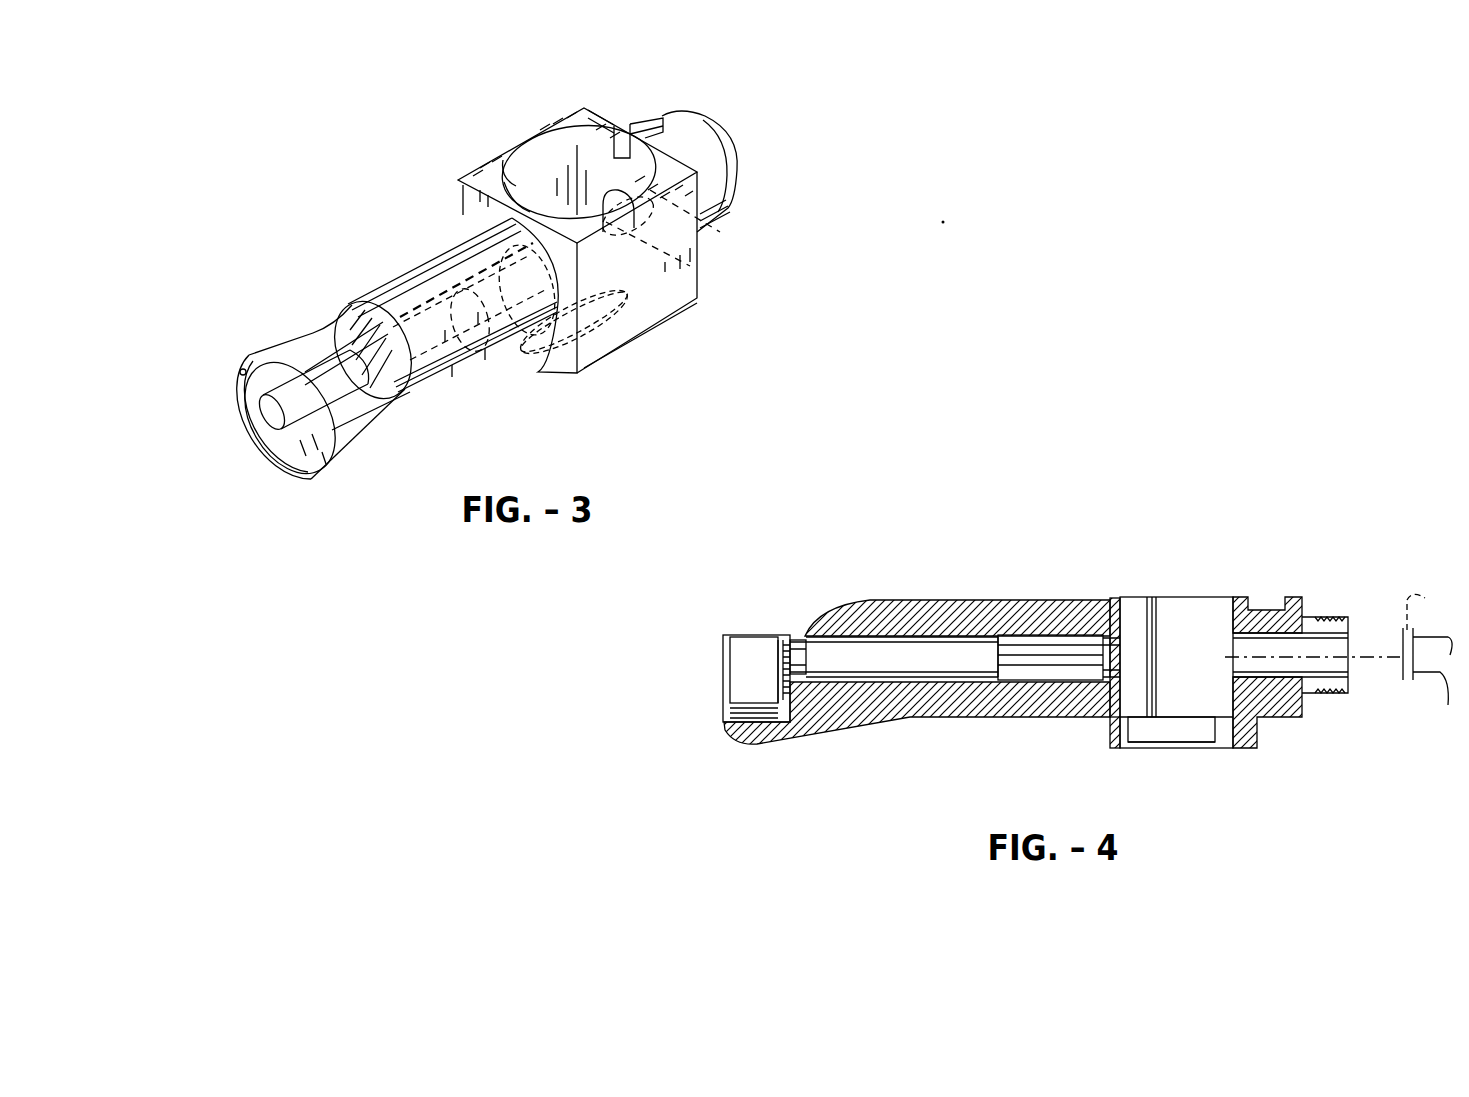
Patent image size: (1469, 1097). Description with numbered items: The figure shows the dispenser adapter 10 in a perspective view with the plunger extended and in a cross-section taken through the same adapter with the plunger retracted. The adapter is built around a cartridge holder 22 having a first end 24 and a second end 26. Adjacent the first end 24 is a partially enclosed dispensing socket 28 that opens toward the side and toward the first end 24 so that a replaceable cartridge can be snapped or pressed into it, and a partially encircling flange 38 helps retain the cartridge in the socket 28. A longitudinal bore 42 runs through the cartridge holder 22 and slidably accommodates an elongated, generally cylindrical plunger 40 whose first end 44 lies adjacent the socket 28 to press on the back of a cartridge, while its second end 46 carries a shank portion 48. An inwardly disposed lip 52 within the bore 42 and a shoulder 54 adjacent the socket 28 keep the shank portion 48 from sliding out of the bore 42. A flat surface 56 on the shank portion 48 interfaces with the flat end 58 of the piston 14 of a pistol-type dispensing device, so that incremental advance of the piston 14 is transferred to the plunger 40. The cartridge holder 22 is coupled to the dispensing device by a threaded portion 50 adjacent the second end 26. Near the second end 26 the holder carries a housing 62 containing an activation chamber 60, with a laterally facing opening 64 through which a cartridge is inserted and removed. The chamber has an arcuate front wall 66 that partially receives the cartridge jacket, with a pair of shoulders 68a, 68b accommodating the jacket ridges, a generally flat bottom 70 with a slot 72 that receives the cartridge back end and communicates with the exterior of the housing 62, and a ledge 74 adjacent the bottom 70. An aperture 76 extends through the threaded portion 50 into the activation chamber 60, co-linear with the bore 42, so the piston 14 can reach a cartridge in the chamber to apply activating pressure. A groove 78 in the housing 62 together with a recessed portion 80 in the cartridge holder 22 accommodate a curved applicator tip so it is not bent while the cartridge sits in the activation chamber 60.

In FIG. 3, the dispenser adapter 10 is at (238, 146).
In FIG. 4, the dispenser adapter 10 is at (1050, 480).
In FIG. 4, the piston 14 is at (1445, 706).
In FIG. 3, the cartridge holder 22 is at (460, 262).
In FIG. 4, the cartridge holder 22 is at (858, 710).
In FIG. 3, the first end 24 is at (216, 407).
In FIG. 4, the first end 24 is at (712, 657).
In FIG. 3, the second end 26 is at (756, 158).
In FIG. 4, the second end 26 is at (1356, 690).
In FIG. 3, the dispensing socket 28 is at (262, 365).
In FIG. 4, the dispensing socket 28 is at (742, 675).
In FIG. 3, the flange 38 is at (278, 425).
In FIG. 4, the flange 38 is at (728, 698).
In FIG. 3, the plunger 40 is at (452, 398).
In FIG. 4, the plunger 40 is at (882, 650).
In FIG. 3, the longitudinal bore 42 is at (420, 425).
In FIG. 4, the longitudinal bore 42 is at (925, 678).
In FIG. 3, the first end of plunger 44 is at (282, 432).
In FIG. 4, the first end of plunger 44 is at (783, 650).
In FIG. 4, the second end of plunger 46 is at (1088, 630).
In FIG. 3, the shank portion 48 is at (510, 372).
In FIG. 4, the shank portion 48 is at (1082, 678).
In FIG. 3, the threaded portion 50 is at (700, 130).
In FIG. 4, the threaded portion 50 is at (1330, 620).
In FIG. 4, the lip 52 is at (1104, 720).
In FIG. 4, the shoulder 54 is at (805, 635).
In FIG. 4, the flat surface 56 is at (1120, 652).
In FIG. 4, the flat end 58 is at (1420, 610).
In FIG. 3, the activation chamber 60 is at (556, 140).
In FIG. 4, the activation chamber 60 is at (1192, 578).
In FIG. 3, the housing 62 is at (608, 332).
In FIG. 4, the housing 62 is at (1245, 735).
In FIG. 3, the laterally facing opening 64 is at (468, 163).
In FIG. 4, the laterally facing opening 64 is at (1150, 578).
In FIG. 4, the arcuate front wall 66 is at (1122, 625).
In FIG. 3, the shoulder 68a is at (604, 198).
In FIG. 3, the shoulder 68b is at (480, 155).
In FIG. 4, the shoulder 68b is at (1143, 600).
In FIG. 4, the bottom 70 is at (1176, 745).
In FIG. 3, the slot 72 is at (600, 378).
In FIG. 4, the slot 72 is at (1155, 742).
In FIG. 4, the ledge 74 is at (1225, 716).
In FIG. 3, the aperture 76 is at (702, 244).
In FIG. 4, the aperture 76 is at (1292, 655).
In FIG. 3, the groove 78 is at (620, 143).
In FIG. 4, the groove 78 is at (1236, 598).
In FIG. 3, the recessed portion 80 is at (660, 133).
In FIG. 4, the recessed portion 80 is at (1276, 607).